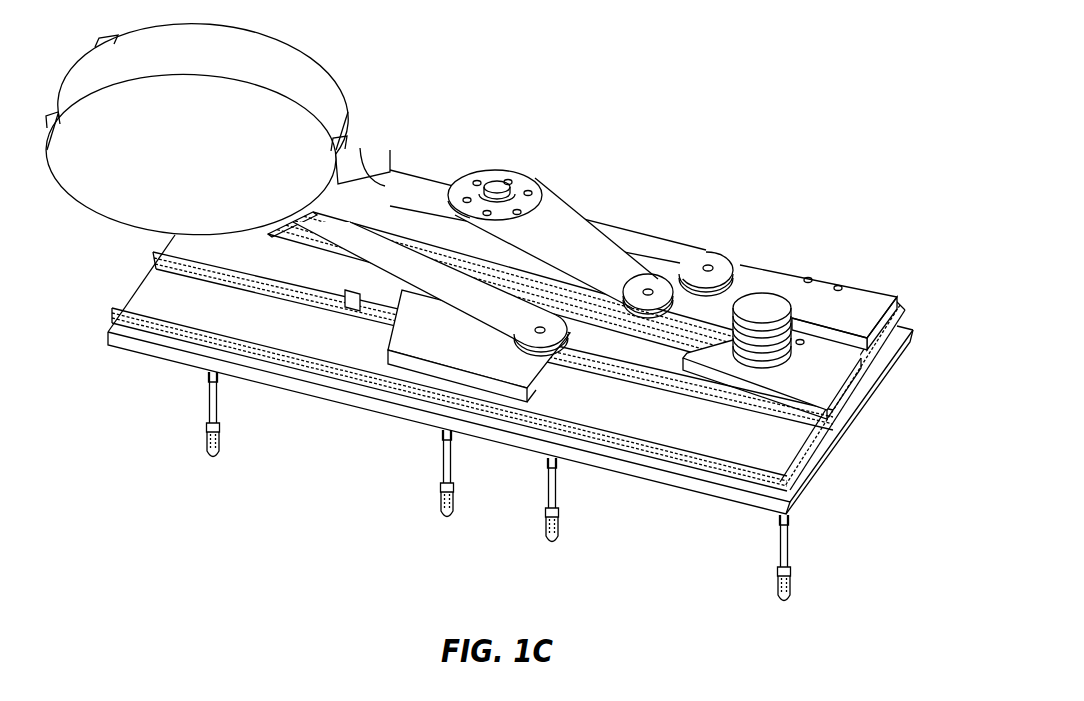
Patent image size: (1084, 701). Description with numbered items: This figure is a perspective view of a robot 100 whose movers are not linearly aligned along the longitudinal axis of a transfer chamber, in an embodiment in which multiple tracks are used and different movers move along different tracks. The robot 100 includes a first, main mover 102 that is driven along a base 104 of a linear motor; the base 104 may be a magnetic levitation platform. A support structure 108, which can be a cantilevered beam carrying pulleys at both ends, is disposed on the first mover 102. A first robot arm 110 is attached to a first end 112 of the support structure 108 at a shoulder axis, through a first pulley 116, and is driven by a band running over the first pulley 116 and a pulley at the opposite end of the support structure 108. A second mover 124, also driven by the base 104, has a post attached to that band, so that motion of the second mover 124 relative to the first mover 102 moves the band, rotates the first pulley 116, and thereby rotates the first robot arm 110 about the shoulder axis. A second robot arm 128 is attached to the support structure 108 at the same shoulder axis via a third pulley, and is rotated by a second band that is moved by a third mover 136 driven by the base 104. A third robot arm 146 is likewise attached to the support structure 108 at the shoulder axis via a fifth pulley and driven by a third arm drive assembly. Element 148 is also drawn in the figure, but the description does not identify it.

The robot 100 is at (893, 99).
The first mover 102 is at (534, 363).
The base 104 is at (888, 363).
The support structure 108 is at (528, 175).
The first robot arm 110 is at (400, 210).
The first end 112 is at (745, 275).
The first pulley 116 is at (713, 253).
The second mover 124 is at (362, 312).
The second robot arm 128 is at (560, 336).
The third mover 136 is at (397, 350).
The third robot arm 146 is at (615, 227).
The top plate 148 is at (900, 297).